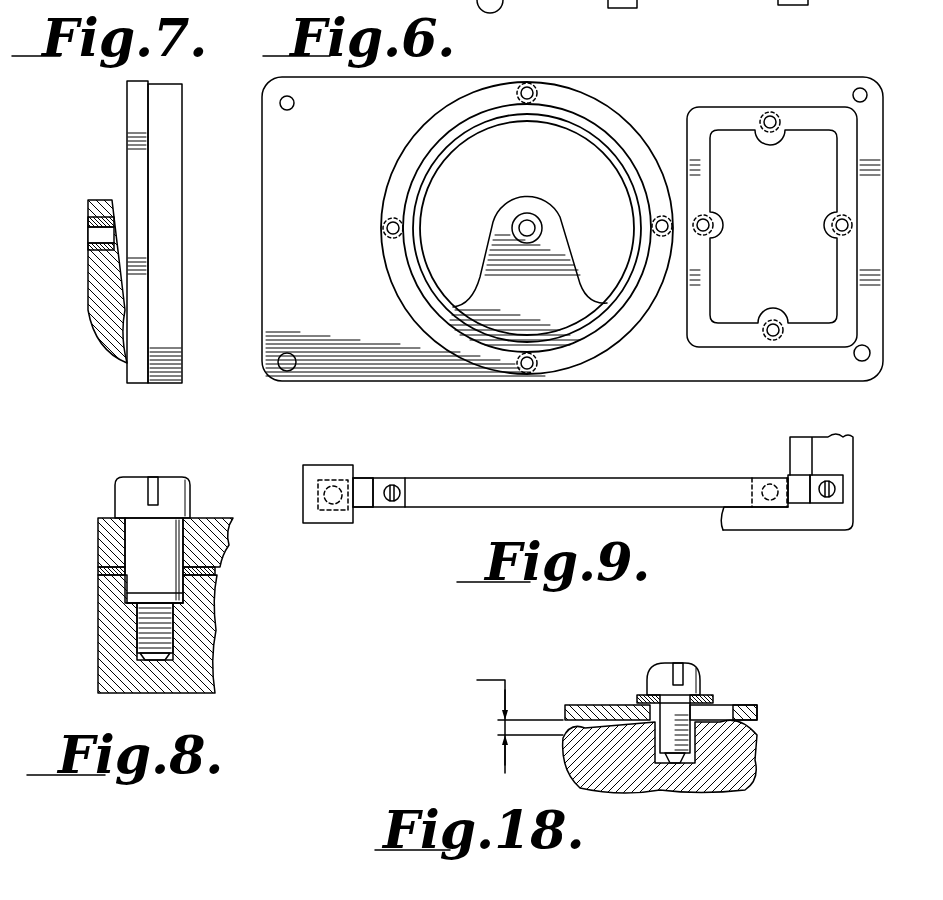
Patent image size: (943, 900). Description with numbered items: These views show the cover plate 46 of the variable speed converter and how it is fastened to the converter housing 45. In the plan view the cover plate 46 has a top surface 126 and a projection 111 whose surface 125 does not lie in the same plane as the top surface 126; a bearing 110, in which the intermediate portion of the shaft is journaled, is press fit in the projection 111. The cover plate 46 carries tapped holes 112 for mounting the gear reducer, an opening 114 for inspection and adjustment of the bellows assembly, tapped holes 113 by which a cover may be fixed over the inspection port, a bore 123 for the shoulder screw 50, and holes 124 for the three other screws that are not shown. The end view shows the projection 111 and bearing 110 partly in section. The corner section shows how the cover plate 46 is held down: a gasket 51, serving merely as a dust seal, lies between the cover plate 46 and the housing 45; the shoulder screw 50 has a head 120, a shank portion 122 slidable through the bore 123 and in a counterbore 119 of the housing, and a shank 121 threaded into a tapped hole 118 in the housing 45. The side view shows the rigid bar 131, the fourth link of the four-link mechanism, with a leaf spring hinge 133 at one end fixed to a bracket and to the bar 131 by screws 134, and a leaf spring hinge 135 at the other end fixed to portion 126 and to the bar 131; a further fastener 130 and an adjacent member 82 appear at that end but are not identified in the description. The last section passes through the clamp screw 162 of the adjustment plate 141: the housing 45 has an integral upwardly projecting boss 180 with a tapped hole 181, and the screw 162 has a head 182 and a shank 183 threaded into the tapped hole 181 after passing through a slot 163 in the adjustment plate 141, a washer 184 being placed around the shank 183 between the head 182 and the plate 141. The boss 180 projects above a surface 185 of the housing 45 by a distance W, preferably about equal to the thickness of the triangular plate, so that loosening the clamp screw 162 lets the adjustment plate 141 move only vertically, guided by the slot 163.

In FIG. 7, the cover plate 46 is at (187, 120).
In FIG. 6, the cover plate 46 is at (676, 70).
In FIG. 8, the cover plate 46 is at (226, 512).
In FIG. 7, the bearing 110 is at (88, 222).
In FIG. 6, the bearing 110 is at (531, 218).
In FIG. 7, the projection 111 is at (84, 264).
In FIG. 6, the projection 111 is at (487, 226).
In FIG. 6, the tapped holes 112 is at (532, 93).
In FIG. 6, the tapped holes 113 is at (768, 113).
In FIG. 6, the opening 114 is at (713, 177).
In FIG. 6, the bore 123 is at (295, 105).
In FIG. 8, the bore 123 is at (128, 552).
In FIG. 6, the holes 124 is at (858, 88).
In FIG. 6, the surface of projection 125 is at (505, 283).
In FIG. 6, the top surface of cover plate 126 is at (283, 236).
In FIG. 9, the top surface of cover plate 126 is at (837, 455).
In FIG. 8, the shoulder screw 50 is at (190, 470).
In FIG. 8, the head 120 is at (130, 502).
In FIG. 8, the shank portion 122 is at (137, 535).
In FIG. 8, the gasket 51 is at (214, 572).
In FIG. 8, the counterbore 119 is at (168, 602).
In FIG. 8, the tapped hole 118 is at (158, 638).
In FIG. 8, the shank 121 is at (143, 630).
In FIG. 8, the housing 45 is at (92, 626).
In FIG. 18, the housing 45 is at (738, 790).
In FIG. 9, the rigid bar 131 is at (480, 488).
In FIG. 9, the leaf spring hinge 133 is at (362, 488).
In FIG. 9, the screw 134 is at (400, 490).
In FIG. 9, the leaf spring hinge 135 is at (800, 480).
In FIG. 9, the screw 130 is at (833, 488).
In FIG. 9, the plate 82 is at (767, 522).
In FIG. 18, the adjustment plate 141 is at (593, 705).
In FIG. 18, the clamp screw 162 is at (702, 648).
In FIG. 18, the head 182 is at (703, 680).
In FIG. 18, the shank 183 is at (714, 697).
In FIG. 18, the slot 163 is at (725, 720).
In FIG. 18, the boss 180 is at (738, 744).
In FIG. 18, the tapped hole 181 is at (650, 777).
In FIG. 18, the washer 184 is at (637, 698).
In FIG. 18, the surface 185 is at (577, 732).
In FIG. 18, the distance W is at (504, 720).